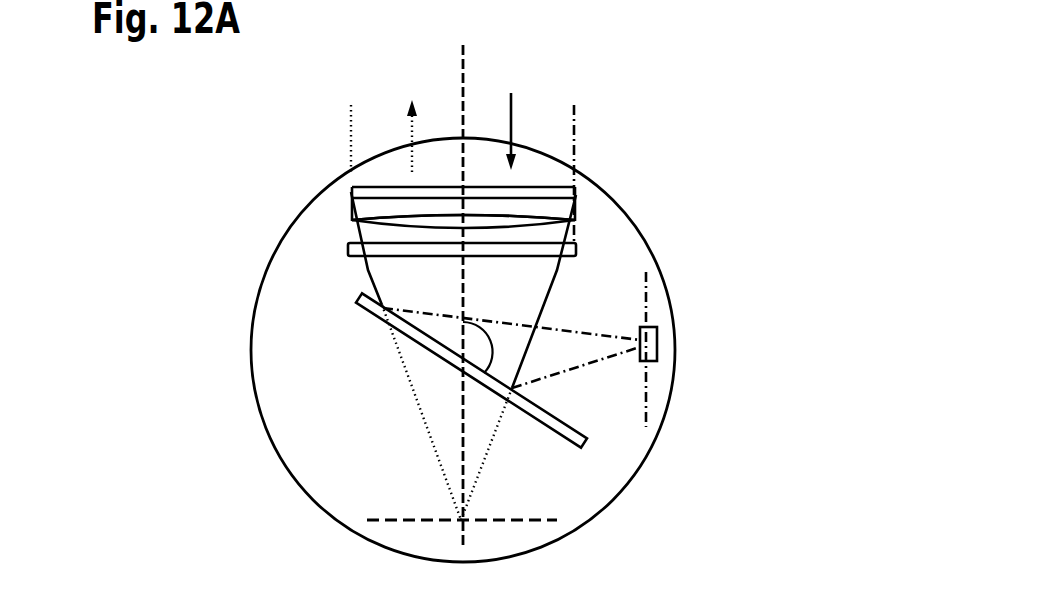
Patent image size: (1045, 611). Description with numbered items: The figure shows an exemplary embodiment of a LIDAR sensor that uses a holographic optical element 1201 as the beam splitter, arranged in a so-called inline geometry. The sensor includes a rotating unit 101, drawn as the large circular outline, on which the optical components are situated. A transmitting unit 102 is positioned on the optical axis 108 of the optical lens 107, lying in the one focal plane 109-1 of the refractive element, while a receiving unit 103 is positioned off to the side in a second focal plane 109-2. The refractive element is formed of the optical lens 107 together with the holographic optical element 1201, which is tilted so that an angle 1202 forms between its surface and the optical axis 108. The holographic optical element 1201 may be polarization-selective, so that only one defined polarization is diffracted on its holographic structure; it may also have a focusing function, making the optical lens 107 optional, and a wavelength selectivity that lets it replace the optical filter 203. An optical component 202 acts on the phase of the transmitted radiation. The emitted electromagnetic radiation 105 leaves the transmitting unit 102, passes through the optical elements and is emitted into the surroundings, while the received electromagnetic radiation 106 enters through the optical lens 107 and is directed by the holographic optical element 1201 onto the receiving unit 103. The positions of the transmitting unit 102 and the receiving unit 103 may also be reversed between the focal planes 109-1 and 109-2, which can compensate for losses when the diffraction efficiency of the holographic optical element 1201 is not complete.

The rotating unit 101 is at (305, 433).
The transmitting unit 102 is at (460, 521).
The receiving unit 103 is at (658, 342).
The emitted electromagnetic radiation 105 is at (412, 116).
The received electromagnetic radiation 106 is at (512, 118).
The optical lens 107 is at (350, 221).
The optical axis 108 is at (465, 66).
The focal plane 109-1 is at (520, 520).
The second focal plane 109-2 is at (648, 382).
The optical component 202 is at (577, 248).
The optical filter 203 is at (576, 192).
The holographic optical element 1201 is at (360, 309).
The angle 1202 is at (487, 342).